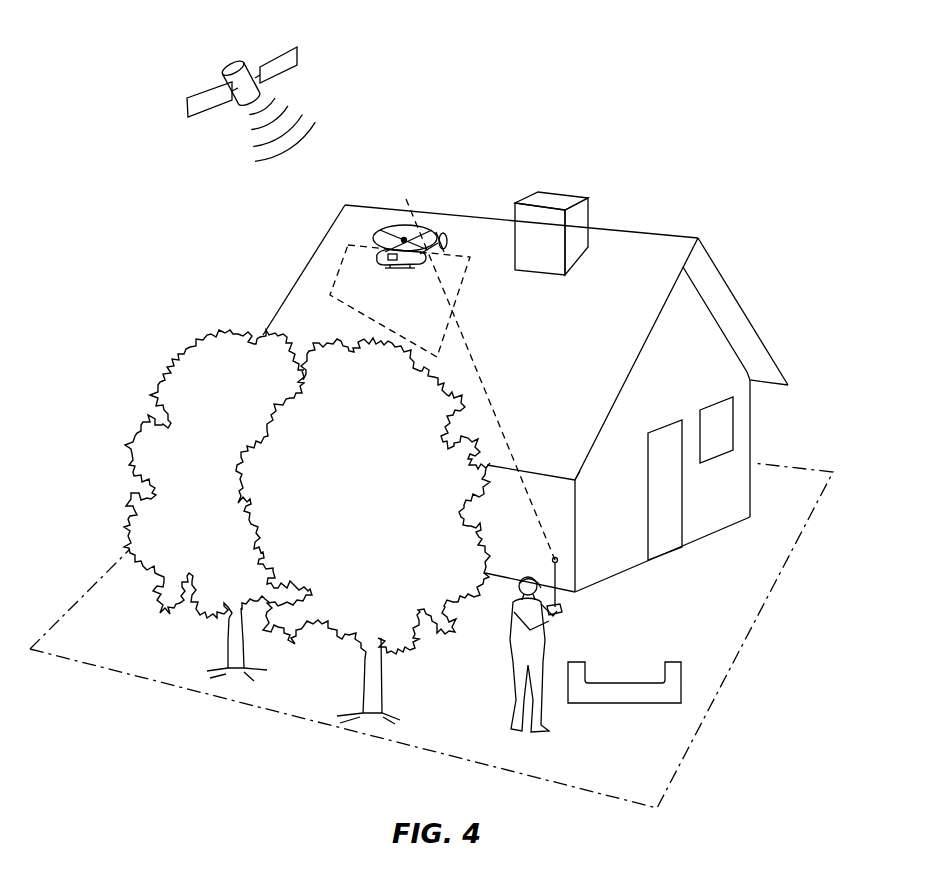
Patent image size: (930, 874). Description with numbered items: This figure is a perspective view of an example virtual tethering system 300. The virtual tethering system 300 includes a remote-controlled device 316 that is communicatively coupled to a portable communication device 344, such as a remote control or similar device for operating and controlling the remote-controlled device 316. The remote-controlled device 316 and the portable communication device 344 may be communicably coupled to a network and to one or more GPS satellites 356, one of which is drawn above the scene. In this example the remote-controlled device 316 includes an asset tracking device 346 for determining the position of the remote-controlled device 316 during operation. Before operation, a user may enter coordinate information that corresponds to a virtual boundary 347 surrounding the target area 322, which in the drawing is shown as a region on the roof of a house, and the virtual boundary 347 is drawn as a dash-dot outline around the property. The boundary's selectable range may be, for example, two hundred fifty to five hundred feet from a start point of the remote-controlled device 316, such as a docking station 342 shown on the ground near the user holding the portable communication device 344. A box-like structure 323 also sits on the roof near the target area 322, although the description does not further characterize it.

The virtual tethering system 300 is at (525, 374).
The remote-controlled device 316 is at (428, 236).
The asset tracking device 346 is at (423, 221).
The target area 322 is at (428, 312).
The rooftop structure 323 is at (568, 313).
The docking station 342 is at (612, 693).
The portable communication device 344 is at (563, 612).
The virtual boundary 347 is at (267, 712).
The GPS satellite 356 is at (238, 38).